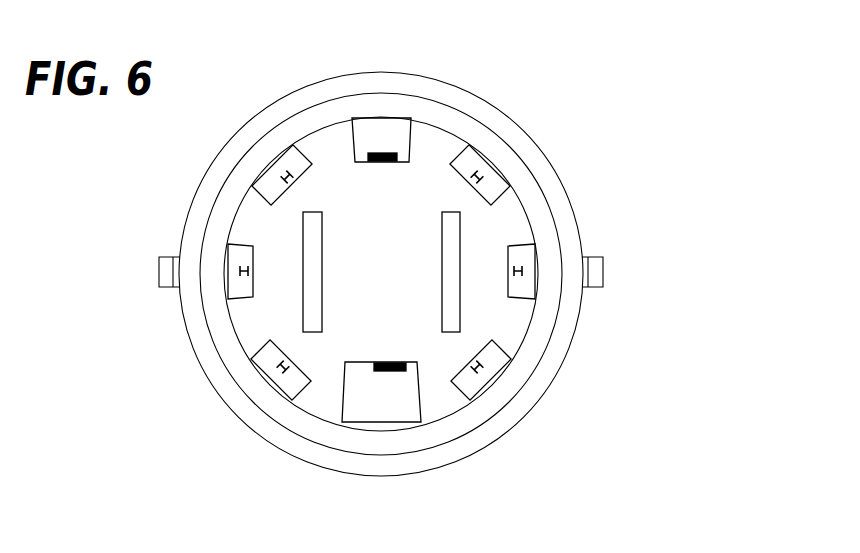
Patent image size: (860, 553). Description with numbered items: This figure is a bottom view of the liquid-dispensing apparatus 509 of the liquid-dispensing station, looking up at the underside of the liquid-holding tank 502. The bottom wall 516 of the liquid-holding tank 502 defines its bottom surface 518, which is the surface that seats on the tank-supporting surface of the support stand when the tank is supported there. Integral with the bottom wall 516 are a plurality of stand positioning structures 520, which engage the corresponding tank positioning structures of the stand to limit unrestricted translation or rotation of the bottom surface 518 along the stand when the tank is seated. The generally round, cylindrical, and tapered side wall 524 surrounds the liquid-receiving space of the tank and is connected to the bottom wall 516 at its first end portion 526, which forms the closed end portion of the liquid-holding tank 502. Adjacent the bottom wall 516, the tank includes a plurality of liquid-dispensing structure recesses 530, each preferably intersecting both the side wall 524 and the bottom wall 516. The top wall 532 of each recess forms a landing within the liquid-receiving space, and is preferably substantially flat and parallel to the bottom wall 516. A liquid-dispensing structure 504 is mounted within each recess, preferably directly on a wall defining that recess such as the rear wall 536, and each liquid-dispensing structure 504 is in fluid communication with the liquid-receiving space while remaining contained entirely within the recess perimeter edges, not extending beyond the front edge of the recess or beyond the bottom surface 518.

The liquid-holding tank 502 is at (462, 90).
The liquid-dispensing structures 504 is at (247, 270).
The connector assembly 509 is at (578, 162).
The bottom wall 516 is at (442, 382).
The bottom surface 518 is at (395, 283).
The stand positioning structures 520 is at (303, 297).
The side wall 524 is at (522, 362).
The first end portion 526 is at (533, 227).
The liquid-dispensing structure recesses 530 is at (237, 252).
The top wall 532 is at (387, 412).
The rear wall 536 is at (360, 362).